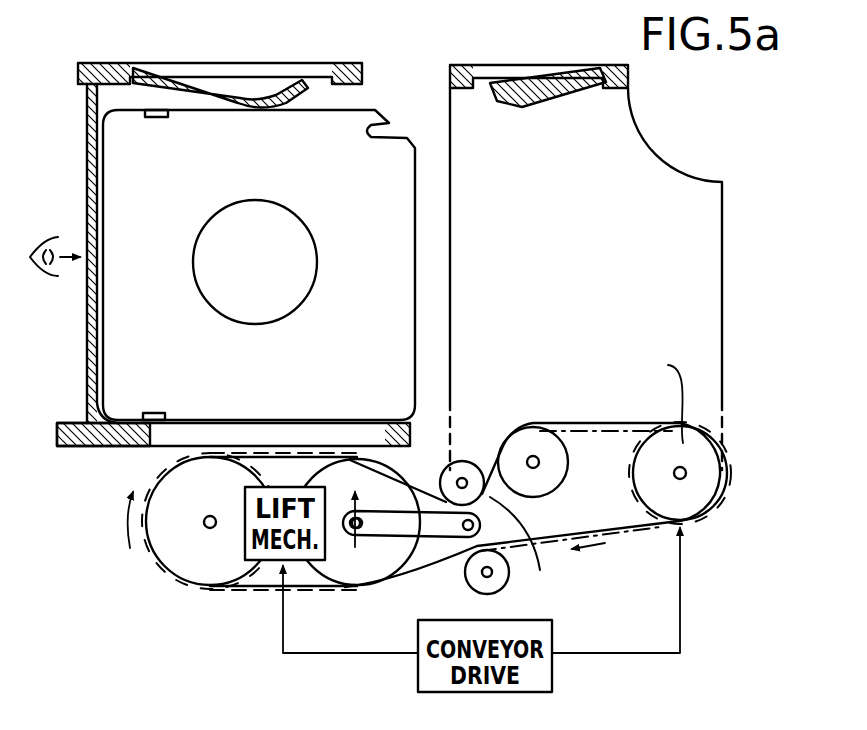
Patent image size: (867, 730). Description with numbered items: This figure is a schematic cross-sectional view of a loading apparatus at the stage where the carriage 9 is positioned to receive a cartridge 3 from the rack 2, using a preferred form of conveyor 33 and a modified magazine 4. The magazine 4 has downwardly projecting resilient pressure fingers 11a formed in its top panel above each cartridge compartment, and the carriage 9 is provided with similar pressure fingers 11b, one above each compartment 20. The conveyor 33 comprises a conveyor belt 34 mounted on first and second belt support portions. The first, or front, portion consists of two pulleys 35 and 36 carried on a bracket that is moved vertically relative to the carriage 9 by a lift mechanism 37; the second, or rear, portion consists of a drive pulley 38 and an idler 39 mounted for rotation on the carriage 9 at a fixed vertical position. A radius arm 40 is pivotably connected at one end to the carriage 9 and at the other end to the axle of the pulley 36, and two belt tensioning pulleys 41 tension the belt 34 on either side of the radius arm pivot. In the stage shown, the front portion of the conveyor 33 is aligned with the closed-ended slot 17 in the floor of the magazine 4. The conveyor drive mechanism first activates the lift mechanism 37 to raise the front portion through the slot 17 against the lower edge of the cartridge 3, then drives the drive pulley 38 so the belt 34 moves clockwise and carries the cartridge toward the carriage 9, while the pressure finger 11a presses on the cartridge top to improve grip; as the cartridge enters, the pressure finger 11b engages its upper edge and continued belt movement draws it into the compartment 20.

The rack 2 is at (157, 62).
The cartridge 3 is at (160, 194).
The magazine 4 is at (72, 434).
The carriage 9 is at (548, 65).
The pressure fingers 11a is at (223, 90).
The pressure fingers 11b is at (550, 100).
The closed-ended slot 17 is at (313, 440).
The compartment 20 is at (458, 115).
The conveyor 33 is at (132, 563).
The conveyor belt 34 is at (645, 540).
The pulley 35 is at (180, 560).
The pulley 36 is at (353, 568).
The lift mechanism 37 is at (240, 560).
The drive pulley 38 is at (708, 463).
The idler 39 is at (553, 466).
The radius arm 40 is at (424, 528).
The belt tensioning pulleys 41 is at (503, 570).